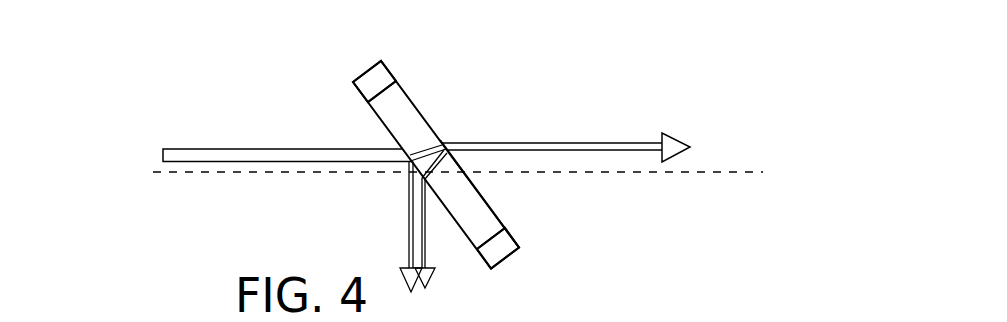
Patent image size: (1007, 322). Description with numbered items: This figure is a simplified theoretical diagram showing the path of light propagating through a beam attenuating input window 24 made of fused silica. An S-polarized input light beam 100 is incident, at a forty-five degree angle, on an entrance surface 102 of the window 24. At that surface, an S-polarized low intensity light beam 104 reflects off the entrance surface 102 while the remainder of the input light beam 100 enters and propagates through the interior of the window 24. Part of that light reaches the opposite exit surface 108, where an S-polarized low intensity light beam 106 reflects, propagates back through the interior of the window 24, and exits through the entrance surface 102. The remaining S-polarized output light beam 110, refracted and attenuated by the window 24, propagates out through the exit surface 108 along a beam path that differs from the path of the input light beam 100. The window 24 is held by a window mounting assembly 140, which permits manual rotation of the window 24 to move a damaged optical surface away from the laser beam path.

The S-polarized input light beam 100 is at (285, 148).
The entrance surface 102 is at (378, 117).
The exit surface 108 is at (417, 110).
The beam attenuating input window 24 is at (491, 210).
The window mounting assembly 140 is at (505, 258).
The S-polarized output light beam 110 is at (560, 142).
The S-polarized low intensity light beam 104 is at (409, 212).
The S-polarized low intensity light beam 106 is at (426, 237).